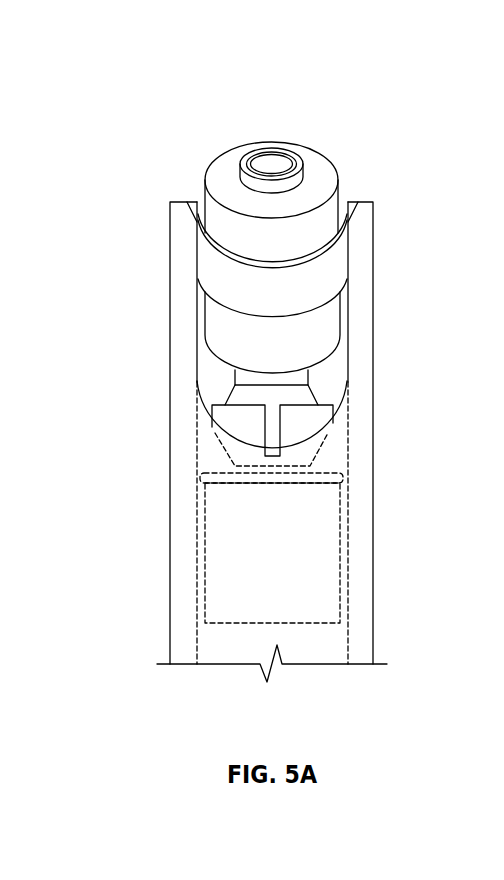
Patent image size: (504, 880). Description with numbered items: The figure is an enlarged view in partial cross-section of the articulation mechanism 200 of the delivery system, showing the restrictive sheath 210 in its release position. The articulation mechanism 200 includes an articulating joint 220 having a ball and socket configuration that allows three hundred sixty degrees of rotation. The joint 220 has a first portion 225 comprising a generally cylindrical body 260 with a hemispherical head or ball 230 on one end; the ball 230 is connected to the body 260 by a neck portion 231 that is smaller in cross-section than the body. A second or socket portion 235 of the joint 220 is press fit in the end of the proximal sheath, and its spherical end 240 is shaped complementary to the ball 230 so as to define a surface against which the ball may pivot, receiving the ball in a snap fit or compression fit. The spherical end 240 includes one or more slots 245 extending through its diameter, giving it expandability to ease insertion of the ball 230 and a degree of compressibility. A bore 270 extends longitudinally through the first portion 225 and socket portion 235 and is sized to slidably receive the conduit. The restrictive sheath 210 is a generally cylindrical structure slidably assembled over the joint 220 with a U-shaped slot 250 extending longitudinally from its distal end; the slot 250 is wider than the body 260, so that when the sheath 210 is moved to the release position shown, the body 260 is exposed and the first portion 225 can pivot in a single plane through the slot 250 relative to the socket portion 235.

The articulation mechanism 200 is at (271, 365).
The restrictive sheath 210 is at (373, 572).
The articulating joint 220 is at (405, 377).
The first portion 225 is at (136, 259).
The ball 230 is at (202, 395).
The neck portion 231 is at (295, 377).
The socket portion 235 is at (141, 576).
The spherical end 240 is at (250, 458).
The slots 245 is at (272, 430).
The U-shaped slot 250 is at (332, 370).
The body 260 is at (335, 164).
The bore 270 is at (273, 167).